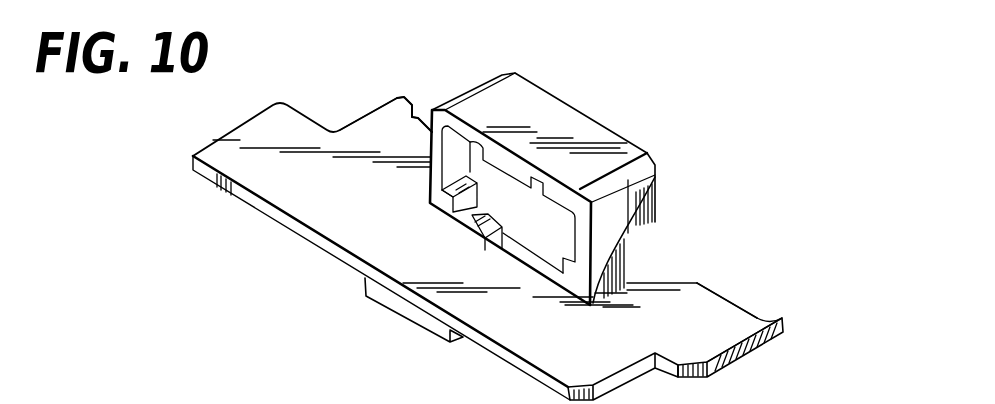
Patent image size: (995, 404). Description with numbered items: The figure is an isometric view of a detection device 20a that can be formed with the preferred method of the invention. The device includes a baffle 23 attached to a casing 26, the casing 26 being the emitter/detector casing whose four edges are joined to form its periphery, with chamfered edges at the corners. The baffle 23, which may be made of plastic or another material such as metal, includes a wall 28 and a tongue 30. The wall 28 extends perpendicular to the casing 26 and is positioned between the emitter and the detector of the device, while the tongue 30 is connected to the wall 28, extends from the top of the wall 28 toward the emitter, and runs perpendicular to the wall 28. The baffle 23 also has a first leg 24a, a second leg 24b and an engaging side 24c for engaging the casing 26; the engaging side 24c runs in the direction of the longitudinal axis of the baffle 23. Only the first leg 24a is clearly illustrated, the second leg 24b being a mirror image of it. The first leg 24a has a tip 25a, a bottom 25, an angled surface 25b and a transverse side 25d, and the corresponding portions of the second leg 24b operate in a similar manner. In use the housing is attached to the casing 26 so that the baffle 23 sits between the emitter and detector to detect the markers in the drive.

The detection device 20a is at (703, 120).
The wall 28 is at (305, 210).
The second leg 24b is at (353, 133).
The tip 25a is at (395, 98).
The bottom 25 is at (415, 126).
The casing 26 is at (548, 108).
The transverse side 25d is at (656, 193).
The angled surface 25b is at (665, 283).
The baffle 23 is at (700, 302).
The engaging side 24c is at (522, 258).
The first leg 24a is at (710, 345).
The tongue 30 is at (395, 300).